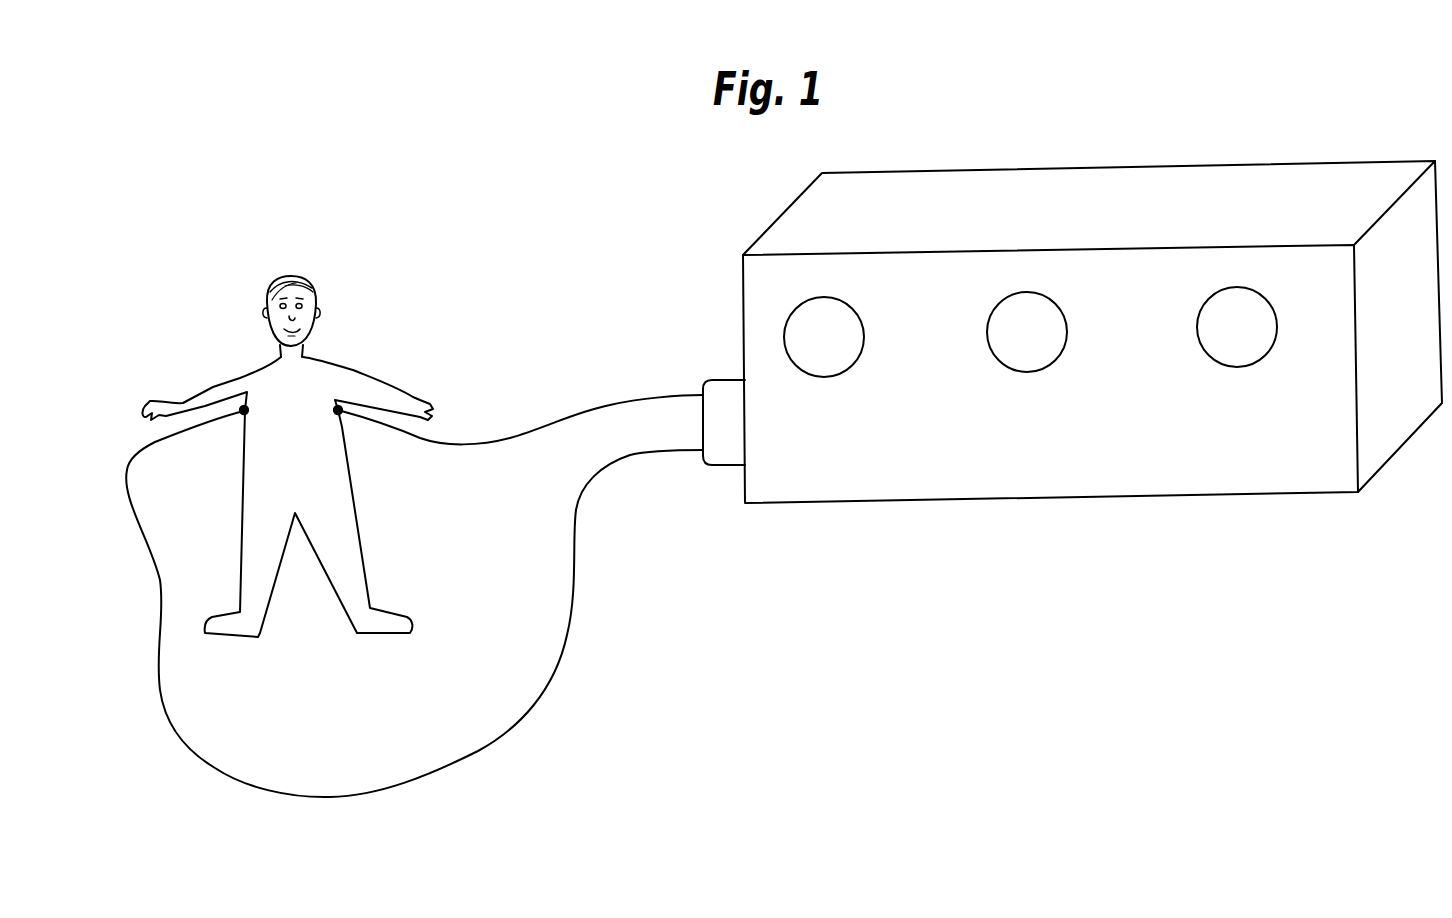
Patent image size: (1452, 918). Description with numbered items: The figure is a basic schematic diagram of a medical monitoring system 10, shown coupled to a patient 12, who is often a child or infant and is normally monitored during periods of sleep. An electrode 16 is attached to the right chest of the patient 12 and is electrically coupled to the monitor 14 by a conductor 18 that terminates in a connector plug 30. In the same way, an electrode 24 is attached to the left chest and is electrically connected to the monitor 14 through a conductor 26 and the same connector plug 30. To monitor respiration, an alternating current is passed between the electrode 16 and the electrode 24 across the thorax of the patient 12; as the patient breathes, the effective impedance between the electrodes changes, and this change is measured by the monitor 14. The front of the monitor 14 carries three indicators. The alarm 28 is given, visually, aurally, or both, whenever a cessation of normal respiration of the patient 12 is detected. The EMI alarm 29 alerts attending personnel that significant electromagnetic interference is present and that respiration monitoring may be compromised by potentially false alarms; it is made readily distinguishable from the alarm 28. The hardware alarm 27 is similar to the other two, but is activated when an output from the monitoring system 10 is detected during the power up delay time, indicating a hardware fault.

The medical monitoring system 10 is at (784, 461).
The patient 12 is at (297, 454).
The monitor 14 is at (1092, 380).
The electrode 16 is at (244, 413).
The conductor 18 is at (414, 588).
The electrode 24 is at (339, 413).
The conductor 26 is at (458, 437).
The hardware alarm 27 is at (1230, 285).
The alarm 28 is at (818, 295).
The EMI alarm 29 is at (1017, 290).
The connector plug 30 is at (717, 463).